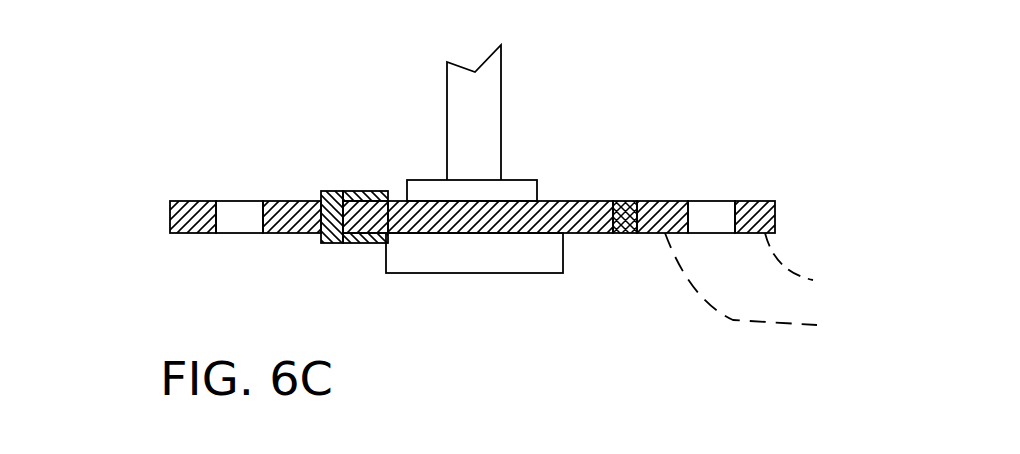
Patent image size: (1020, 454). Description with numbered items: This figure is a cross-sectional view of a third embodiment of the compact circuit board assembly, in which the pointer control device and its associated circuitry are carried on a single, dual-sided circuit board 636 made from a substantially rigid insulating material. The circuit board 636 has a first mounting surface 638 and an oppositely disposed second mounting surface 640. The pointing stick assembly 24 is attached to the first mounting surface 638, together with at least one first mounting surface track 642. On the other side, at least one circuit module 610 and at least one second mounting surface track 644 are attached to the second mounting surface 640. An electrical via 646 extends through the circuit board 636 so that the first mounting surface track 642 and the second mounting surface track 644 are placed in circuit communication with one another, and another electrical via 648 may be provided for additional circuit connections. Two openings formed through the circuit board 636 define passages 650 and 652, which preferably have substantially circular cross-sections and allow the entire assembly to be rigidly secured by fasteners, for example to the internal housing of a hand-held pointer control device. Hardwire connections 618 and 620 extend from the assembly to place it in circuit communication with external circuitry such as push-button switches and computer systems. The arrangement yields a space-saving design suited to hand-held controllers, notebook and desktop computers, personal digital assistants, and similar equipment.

The pointing stick assembly 24 is at (520, 76).
The circuit module 610 is at (493, 258).
The hardwire connection 618 is at (773, 261).
The hardwire connection 620 is at (733, 322).
The dual-sided circuit board 636 is at (758, 201).
The first mounting surface 638 is at (568, 201).
The second mounting surface 640 is at (598, 233).
The first mounting surface track 642 is at (372, 191).
The second mounting surface track 644 is at (360, 243).
The electrical via 646 is at (323, 215).
The electrical via 648 is at (620, 201).
The passage 650 is at (244, 218).
The passage 652 is at (703, 208).